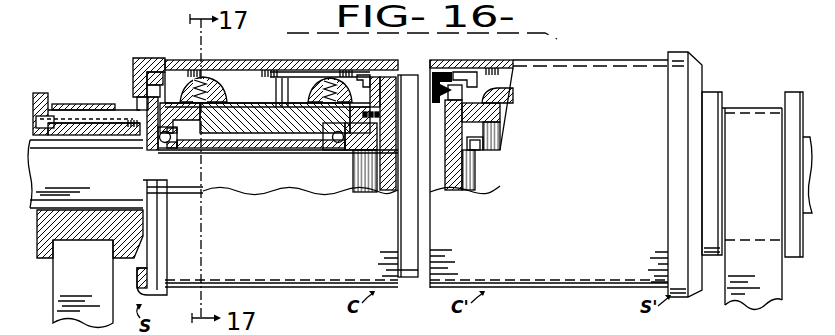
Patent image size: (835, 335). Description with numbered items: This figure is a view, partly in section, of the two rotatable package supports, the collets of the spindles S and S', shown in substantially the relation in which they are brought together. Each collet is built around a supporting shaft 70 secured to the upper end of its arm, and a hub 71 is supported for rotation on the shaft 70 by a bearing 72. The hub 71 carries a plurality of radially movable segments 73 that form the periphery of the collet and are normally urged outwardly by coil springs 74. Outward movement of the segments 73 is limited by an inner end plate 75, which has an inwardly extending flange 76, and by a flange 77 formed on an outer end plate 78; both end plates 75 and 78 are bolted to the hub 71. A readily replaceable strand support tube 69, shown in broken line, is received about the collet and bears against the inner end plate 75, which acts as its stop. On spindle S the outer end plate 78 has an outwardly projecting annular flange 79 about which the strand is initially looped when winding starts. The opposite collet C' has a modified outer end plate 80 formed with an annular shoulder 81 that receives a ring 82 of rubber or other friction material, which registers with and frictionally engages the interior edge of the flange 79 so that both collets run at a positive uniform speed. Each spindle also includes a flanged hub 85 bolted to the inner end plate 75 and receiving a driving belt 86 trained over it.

The strand support tube 69 is at (263, 67).
The supporting shaft 70 is at (273, 189).
The hub 71 is at (244, 141).
The bearing 72 is at (155, 152).
The radially movable segments 73 is at (311, 65).
The coil springs 74 is at (217, 85).
The inner end plate 75 is at (133, 72).
The inwardly extending flange 76 is at (170, 72).
The flange 77 is at (370, 78).
The outer end plate 78 is at (391, 138).
The outwardly projecting annular flange 79 is at (408, 75).
The modified outer end plate 80 is at (457, 177).
The annular shoulder 81 is at (426, 112).
The ring 82 is at (427, 80).
The flanged hub 85 is at (46, 90).
The driving belt 86 is at (70, 107).